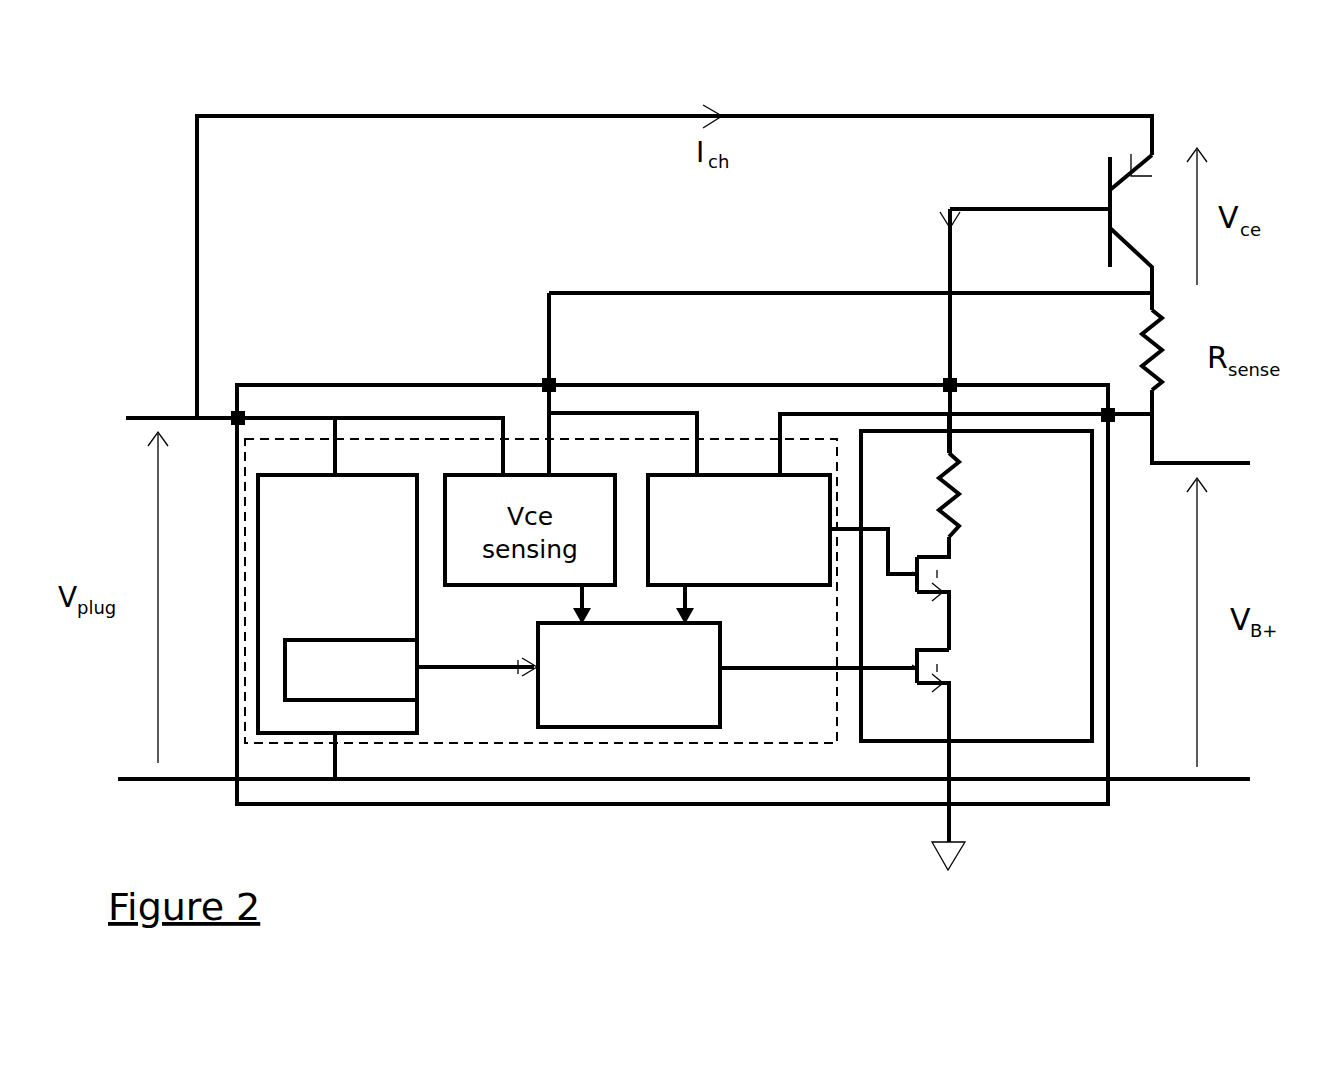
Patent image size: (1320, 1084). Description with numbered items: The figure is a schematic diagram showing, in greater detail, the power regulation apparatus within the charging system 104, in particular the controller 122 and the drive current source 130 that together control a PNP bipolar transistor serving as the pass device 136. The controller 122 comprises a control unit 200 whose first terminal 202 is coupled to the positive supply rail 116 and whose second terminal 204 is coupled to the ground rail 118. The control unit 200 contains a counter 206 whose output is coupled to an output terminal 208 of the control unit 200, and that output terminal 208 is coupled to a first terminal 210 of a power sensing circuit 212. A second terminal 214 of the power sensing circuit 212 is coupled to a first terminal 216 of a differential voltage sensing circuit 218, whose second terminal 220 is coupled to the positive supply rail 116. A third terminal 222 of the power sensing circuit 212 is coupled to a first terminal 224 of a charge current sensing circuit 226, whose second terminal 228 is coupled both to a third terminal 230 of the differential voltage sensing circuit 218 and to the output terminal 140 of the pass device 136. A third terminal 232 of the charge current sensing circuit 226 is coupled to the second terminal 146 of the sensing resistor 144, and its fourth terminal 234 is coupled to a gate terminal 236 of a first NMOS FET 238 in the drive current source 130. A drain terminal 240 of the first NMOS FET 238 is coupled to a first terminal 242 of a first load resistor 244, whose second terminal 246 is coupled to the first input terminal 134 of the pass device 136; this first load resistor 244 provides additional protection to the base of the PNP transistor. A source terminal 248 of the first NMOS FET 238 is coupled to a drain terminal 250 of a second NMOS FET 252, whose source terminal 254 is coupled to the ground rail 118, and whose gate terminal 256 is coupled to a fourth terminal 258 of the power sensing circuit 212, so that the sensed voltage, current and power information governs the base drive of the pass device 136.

The charging system 104 is at (470, 385).
The positive supply rail 116 is at (271, 418).
The ground rail 118 is at (398, 780).
The controller 122 is at (760, 743).
The drive current source 130 is at (900, 742).
The first input terminal 134 is at (1110, 196).
The pass device 136 is at (1118, 207).
The output terminal 140 is at (1152, 270).
The sensing resistor 144 is at (1160, 348).
The second terminal 146 is at (1155, 400).
The control unit 200 is at (337, 604).
The first terminal 202 is at (337, 472).
The second terminal 204 is at (330, 735).
The counter 206 is at (351, 670).
The output terminal 208 is at (415, 668).
The first terminal 210 is at (520, 668).
The power sensing circuit 212 is at (652, 730).
The second terminal 214 is at (578, 607).
The first terminal 216 is at (580, 588).
The differential voltage sensing circuit 218 is at (527, 475).
The second terminal 220 is at (503, 472).
The third terminal 222 is at (685, 618).
The first terminal 224 is at (690, 590).
The charge current sensing circuit 226 is at (720, 475).
The second terminal 228 is at (697, 473).
The third terminal 230 is at (548, 473).
The third terminal 232 is at (778, 475).
The fourth terminal 234 is at (837, 527).
The gate terminal 236 is at (912, 572).
The first NMOS FET 238 is at (934, 575).
The drain terminal 240 is at (950, 555).
The first terminal 242 is at (955, 535).
The first load resistor 244 is at (960, 500).
The second terminal 246 is at (950, 450).
The source terminal 248 is at (950, 600).
The drain terminal 250 is at (950, 650).
The second NMOS FET 252 is at (934, 667).
The source terminal 254 is at (950, 690).
The gate terminal 256 is at (912, 667).
The fourth terminal 258 is at (725, 668).